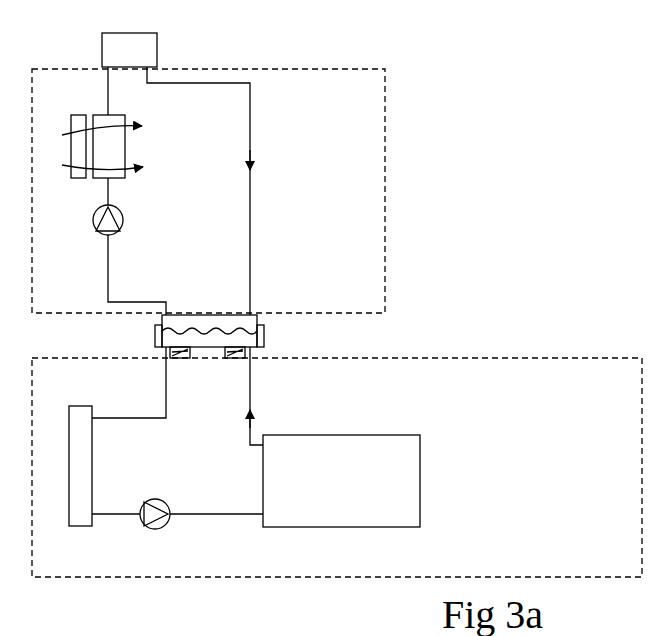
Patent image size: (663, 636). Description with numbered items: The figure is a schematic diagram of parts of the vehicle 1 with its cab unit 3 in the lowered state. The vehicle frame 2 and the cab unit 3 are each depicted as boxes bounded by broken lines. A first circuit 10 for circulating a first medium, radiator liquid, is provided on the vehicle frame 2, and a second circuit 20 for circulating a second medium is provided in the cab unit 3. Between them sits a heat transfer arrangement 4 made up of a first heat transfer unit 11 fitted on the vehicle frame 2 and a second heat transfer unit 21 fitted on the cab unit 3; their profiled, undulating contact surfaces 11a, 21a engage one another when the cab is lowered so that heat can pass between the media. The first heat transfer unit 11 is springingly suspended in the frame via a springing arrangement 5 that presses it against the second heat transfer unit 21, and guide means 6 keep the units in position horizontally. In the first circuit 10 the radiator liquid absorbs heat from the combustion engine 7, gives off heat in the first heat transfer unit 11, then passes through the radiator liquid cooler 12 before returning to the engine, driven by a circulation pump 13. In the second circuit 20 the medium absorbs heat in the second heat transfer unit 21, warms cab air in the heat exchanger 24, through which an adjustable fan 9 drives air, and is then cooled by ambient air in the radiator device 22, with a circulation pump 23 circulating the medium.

The vehicle 1 is at (480, 243).
The vehicle frame 2 is at (520, 364).
The cab unit 3 is at (382, 128).
The heat transfer arrangement 4 is at (260, 313).
The springing arrangement 5 is at (178, 358).
The guide means 6 is at (155, 333).
The combustion engine 7 is at (412, 471).
The adjustable fan 9 is at (73, 143).
The first circuit 10 is at (117, 401).
The first heat transfer unit 11 is at (213, 340).
The contact surface 11a is at (178, 314).
The radiator liquid cooler 12 is at (84, 470).
The circulation pump 13 is at (162, 525).
The second circuit 20 is at (283, 181).
The second heat transfer unit 21 is at (200, 322).
The contact surface 21a is at (199, 340).
The radiator device 22 is at (158, 47).
The circulation pump 23 is at (124, 218).
The heat exchanger 24 is at (127, 143).